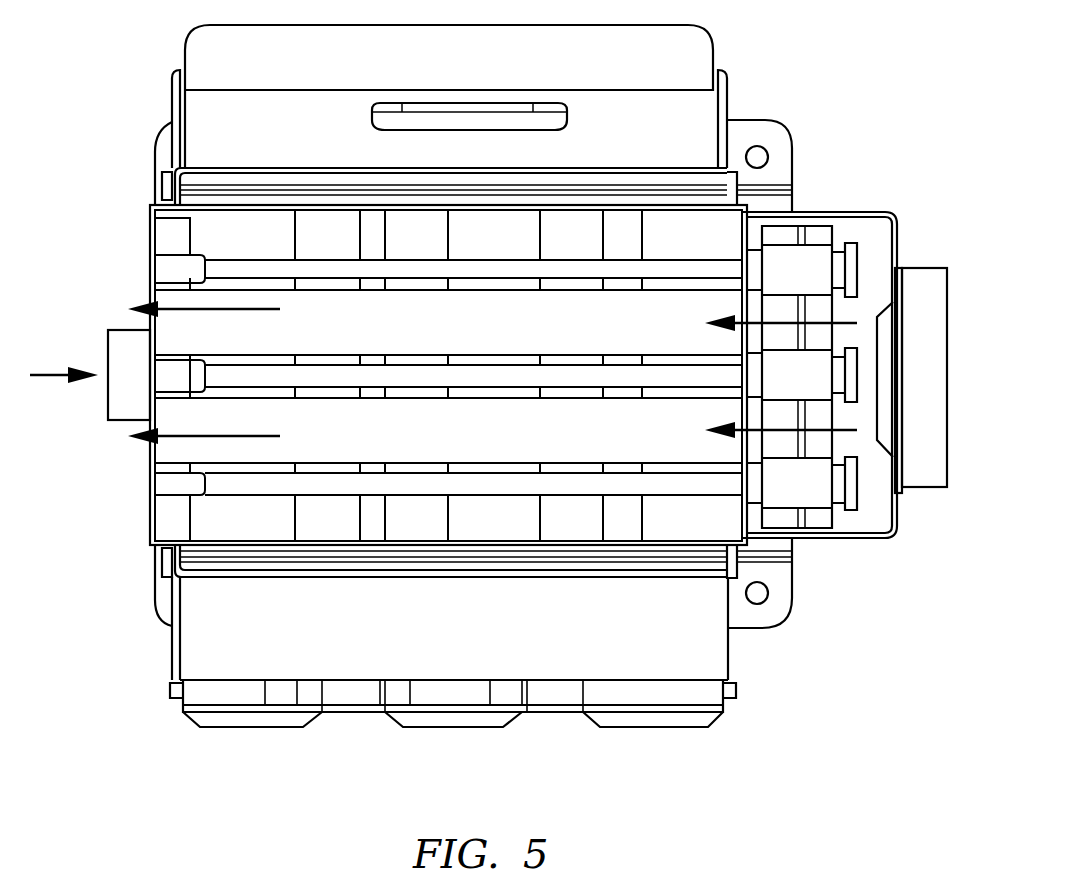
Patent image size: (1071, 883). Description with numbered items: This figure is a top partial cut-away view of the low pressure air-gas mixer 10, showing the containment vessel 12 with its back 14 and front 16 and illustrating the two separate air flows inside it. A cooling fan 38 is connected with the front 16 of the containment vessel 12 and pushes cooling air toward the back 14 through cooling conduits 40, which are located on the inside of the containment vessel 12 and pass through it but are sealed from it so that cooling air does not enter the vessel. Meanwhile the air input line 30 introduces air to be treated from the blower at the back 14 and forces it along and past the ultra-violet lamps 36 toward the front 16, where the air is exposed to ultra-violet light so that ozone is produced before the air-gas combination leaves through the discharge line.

The low pressure air-gas mixer 10 is at (98, 644).
The containment vessel 12 is at (150, 538).
The back 14 is at (150, 500).
The front 16 is at (753, 553).
The air input line 30 is at (125, 422).
The ultra-violet lamp 36 is at (490, 265).
The cooling fan 38 is at (920, 268).
The cooling conduit 40 is at (617, 428).